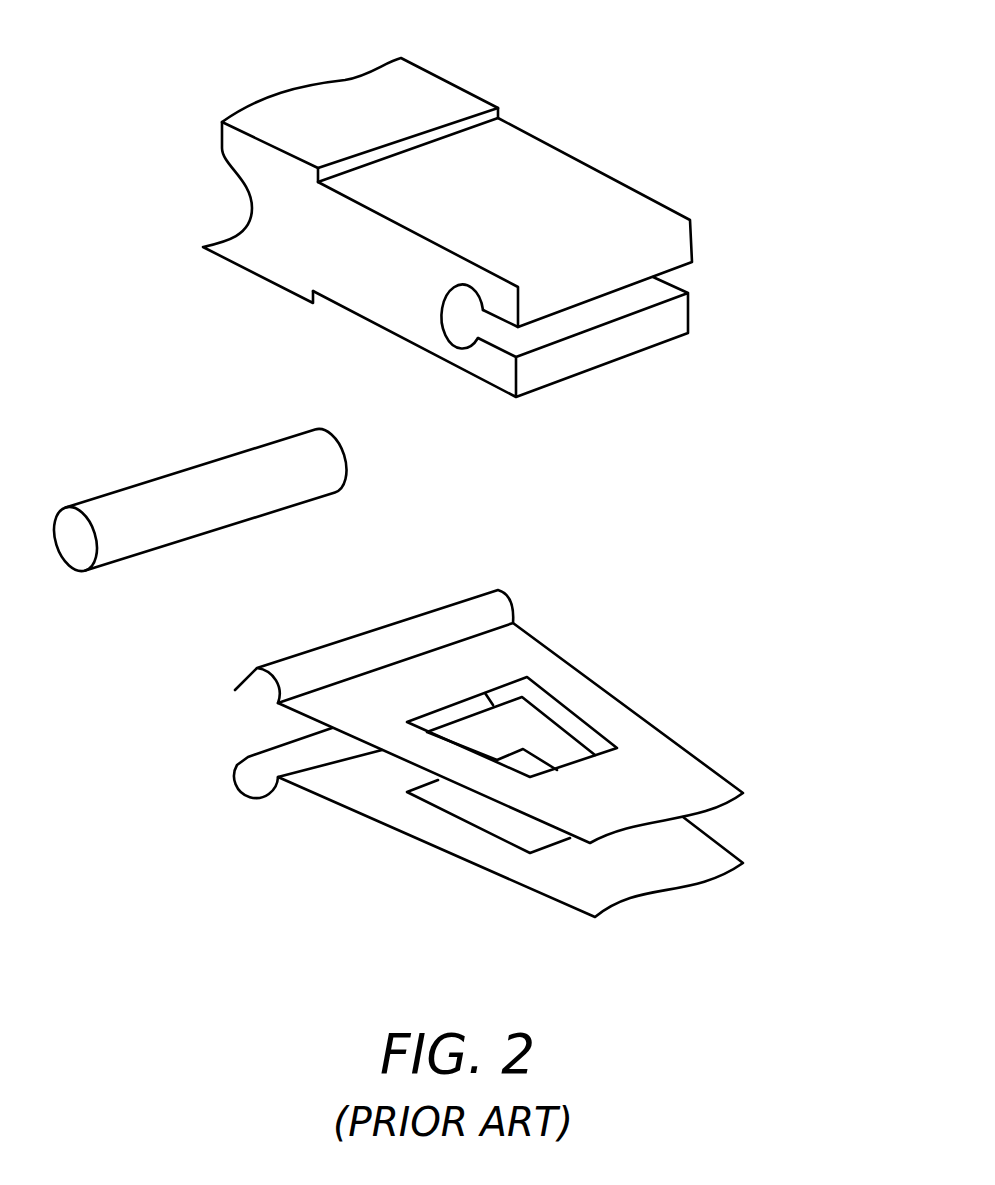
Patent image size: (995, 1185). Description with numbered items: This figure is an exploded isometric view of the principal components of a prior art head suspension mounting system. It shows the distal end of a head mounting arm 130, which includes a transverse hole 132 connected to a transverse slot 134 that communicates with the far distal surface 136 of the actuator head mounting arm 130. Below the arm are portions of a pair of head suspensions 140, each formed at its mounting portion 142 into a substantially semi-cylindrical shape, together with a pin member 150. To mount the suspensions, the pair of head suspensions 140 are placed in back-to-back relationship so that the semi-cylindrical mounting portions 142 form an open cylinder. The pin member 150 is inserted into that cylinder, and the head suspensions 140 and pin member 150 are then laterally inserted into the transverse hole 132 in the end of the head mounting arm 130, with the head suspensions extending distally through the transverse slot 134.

The head mounting arm 130 is at (546, 244).
The transverse hole 132 is at (457, 320).
The transverse slot 134 is at (640, 292).
The far distal surface 136 is at (643, 257).
The head suspension 140 is at (501, 751).
The mounting portion 142 is at (498, 607).
The pin member 150 is at (207, 490).